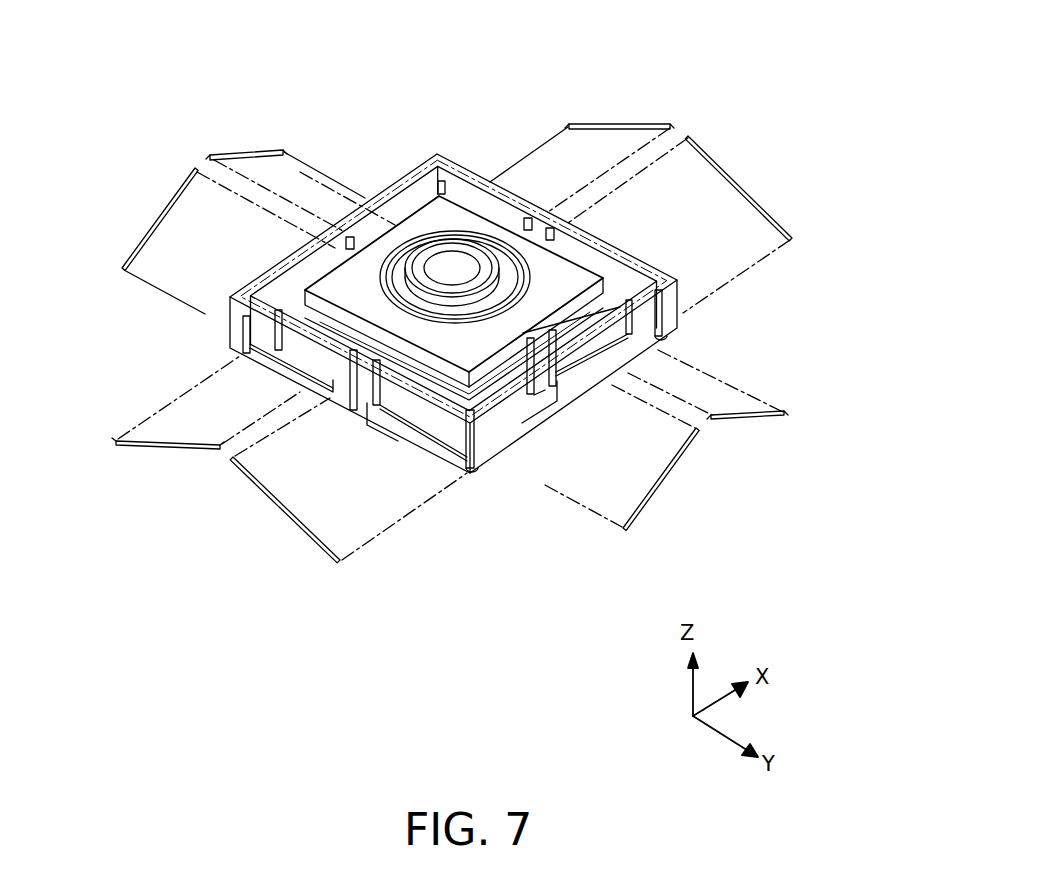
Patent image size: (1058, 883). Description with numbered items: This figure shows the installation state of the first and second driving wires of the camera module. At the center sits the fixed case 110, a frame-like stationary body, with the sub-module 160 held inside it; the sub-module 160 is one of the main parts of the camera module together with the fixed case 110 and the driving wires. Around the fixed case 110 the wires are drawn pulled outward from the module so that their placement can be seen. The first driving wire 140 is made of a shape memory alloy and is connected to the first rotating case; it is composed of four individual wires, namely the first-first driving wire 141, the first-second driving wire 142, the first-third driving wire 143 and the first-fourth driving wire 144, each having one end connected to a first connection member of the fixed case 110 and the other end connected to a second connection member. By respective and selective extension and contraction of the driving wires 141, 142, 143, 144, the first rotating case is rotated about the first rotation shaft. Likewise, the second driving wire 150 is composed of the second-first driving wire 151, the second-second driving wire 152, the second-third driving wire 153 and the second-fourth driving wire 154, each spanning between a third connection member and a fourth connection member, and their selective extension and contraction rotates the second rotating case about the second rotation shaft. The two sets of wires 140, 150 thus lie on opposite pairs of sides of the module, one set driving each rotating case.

The fixed case 110 is at (392, 180).
The sub-module 160 is at (457, 213).
The first driving wire 140 is at (793, 83).
The 1-1 driving wire 141 is at (280, 508).
The 1-2 driving wire 142 is at (157, 447).
The 1-3 driving wire 143 is at (640, 124).
The 1-4 driving wire 144 is at (717, 162).
The second driving wire 150 is at (150, 78).
The 2-1 driving wire 151 is at (663, 480).
The 2-2 driving wire 152 is at (772, 422).
The 2-3 driving wire 153 is at (225, 156).
The 2-4 driving wire 154 is at (180, 193).